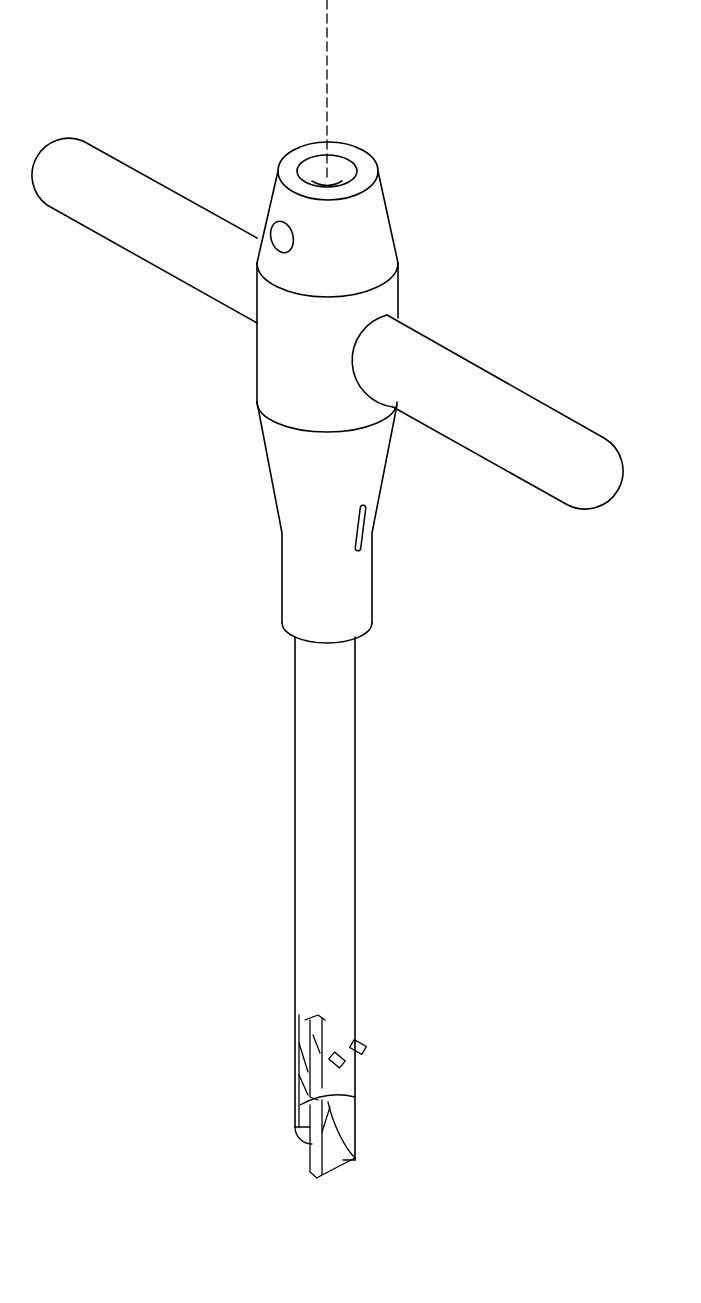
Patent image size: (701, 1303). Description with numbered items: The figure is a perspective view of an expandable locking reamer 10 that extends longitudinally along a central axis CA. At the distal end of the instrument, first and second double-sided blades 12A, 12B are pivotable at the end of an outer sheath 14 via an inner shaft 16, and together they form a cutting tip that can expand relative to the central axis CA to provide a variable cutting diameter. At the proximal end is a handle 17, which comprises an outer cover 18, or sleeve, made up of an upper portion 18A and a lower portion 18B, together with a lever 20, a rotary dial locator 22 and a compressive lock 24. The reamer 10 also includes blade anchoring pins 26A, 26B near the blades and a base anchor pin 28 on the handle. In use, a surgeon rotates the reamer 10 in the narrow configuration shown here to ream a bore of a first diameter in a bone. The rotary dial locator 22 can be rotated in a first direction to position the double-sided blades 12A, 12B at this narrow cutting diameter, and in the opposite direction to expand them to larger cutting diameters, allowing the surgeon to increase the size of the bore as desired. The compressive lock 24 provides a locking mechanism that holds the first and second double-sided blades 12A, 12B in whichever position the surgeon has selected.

The expandable locking reamer 10 is at (166, 112).
The central axis CA is at (327, 32).
The first double-sided blade 12A is at (338, 1123).
The second double-sided blade 12B is at (300, 1115).
The outer sheath 14 is at (308, 773).
The inner shaft 16 is at (311, 1040).
The handle 17 is at (438, 296).
The outer cover 18 is at (250, 405).
The upper portion 18A is at (261, 362).
The lower portion 18B is at (294, 569).
The lever 20 is at (538, 423).
The rotary dial locator 22 is at (373, 228).
The compressive lock 24 is at (366, 530).
The blade anchoring pin 26A is at (367, 1048).
The blade anchoring pin 26B is at (345, 1066).
The base anchor pin 28 is at (270, 230).